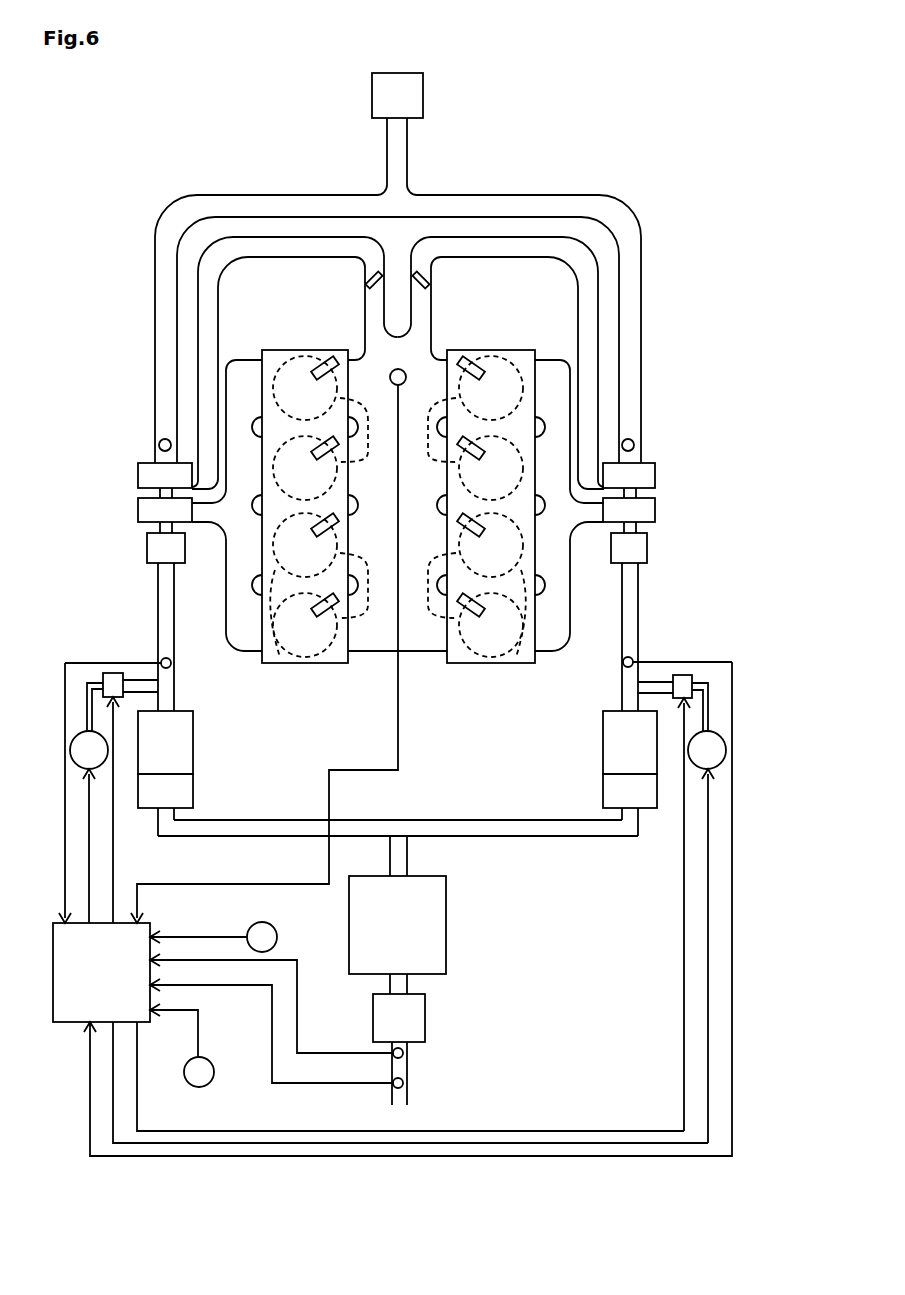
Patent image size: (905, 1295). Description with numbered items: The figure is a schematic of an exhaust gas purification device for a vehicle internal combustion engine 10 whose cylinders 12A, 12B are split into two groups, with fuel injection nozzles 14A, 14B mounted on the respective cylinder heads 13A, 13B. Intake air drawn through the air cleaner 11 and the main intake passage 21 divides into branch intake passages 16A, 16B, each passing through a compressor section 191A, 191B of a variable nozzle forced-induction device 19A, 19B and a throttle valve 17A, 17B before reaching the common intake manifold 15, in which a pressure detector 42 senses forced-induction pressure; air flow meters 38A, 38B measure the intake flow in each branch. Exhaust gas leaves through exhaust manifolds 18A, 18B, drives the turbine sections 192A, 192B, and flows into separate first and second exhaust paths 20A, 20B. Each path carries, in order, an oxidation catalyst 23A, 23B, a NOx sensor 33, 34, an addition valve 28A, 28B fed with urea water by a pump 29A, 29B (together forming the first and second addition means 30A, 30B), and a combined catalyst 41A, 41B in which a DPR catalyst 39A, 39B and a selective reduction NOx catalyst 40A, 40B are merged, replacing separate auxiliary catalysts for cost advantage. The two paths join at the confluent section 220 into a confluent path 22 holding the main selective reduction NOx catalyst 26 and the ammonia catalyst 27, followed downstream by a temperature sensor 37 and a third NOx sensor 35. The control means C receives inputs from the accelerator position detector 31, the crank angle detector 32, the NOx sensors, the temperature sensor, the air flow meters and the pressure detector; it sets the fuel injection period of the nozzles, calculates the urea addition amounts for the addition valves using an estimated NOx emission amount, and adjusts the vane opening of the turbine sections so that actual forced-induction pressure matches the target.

The internal combustion engine 10 is at (170, 143).
The air cleaner 11 is at (423, 94).
The main intake passage 21 is at (407, 130).
The branch intake passage 16A is at (270, 247).
The branch intake passage 16B is at (527, 247).
The throttle valve 17A is at (374, 270).
The throttle valve 17B is at (421, 270).
The air flow meter 38A is at (165, 437).
The air flow meter 38B is at (630, 437).
The forced-induction device 19A is at (150, 396).
The forced-induction device 19B is at (735, 396).
The compressor section 191A is at (152, 463).
The turbine section 192A is at (140, 500).
The compressor section 191B is at (648, 468).
The turbine section 192B is at (648, 505).
The first exhaust path 20A is at (160, 527).
The second exhaust path 20B is at (636, 527).
The first oxidation catalyst 23A is at (147, 550).
The second oxidation catalyst 23B is at (647, 550).
The fuel injection nozzle 14A is at (300, 440).
The fuel injection nozzle 14B is at (496, 440).
The cylinder 12A is at (353, 486).
The cylinder 12B is at (446, 486).
The cylinder head 13A is at (331, 663).
The cylinder head 13B is at (465, 663).
The intake manifold 15 is at (420, 652).
The pressure detector 42 is at (407, 380).
The exhaust manifold 18A is at (230, 612).
The exhaust manifold 18B is at (566, 612).
The first NOx sensor 33 is at (170, 666).
The second NOx sensor 34 is at (622, 664).
The DPR catalyst 39A is at (170, 738).
The selective reduction NOx catalyst 40A is at (170, 791).
The combined catalyst 41A is at (258, 725).
The DPR catalyst 39B is at (604, 736).
The selective reduction NOx catalyst 40B is at (604, 789).
The combined catalyst 41B is at (540, 725).
The first addition valve 28A is at (108, 673).
The second addition valve 28B is at (686, 675).
The first pump 29A is at (82, 732).
The second pump 29B is at (714, 732).
The first addition means 30A is at (100, 628).
The second addition means 30B is at (786, 650).
The confluent section 220 is at (397, 820).
The confluent path 22 is at (407, 856).
The main selective reduction NOx catalyst 26 is at (440, 916).
The ammonia catalyst 27 is at (426, 1024).
The temperature sensor 37 is at (404, 1055).
The third NOx sensor 35 is at (404, 1085).
The accelerator position detector 31 is at (278, 940).
The crank angle detector 32 is at (215, 1074).
The control means C is at (53, 973).